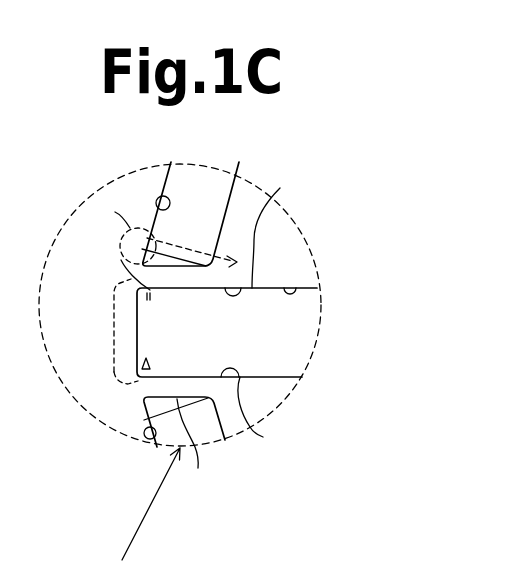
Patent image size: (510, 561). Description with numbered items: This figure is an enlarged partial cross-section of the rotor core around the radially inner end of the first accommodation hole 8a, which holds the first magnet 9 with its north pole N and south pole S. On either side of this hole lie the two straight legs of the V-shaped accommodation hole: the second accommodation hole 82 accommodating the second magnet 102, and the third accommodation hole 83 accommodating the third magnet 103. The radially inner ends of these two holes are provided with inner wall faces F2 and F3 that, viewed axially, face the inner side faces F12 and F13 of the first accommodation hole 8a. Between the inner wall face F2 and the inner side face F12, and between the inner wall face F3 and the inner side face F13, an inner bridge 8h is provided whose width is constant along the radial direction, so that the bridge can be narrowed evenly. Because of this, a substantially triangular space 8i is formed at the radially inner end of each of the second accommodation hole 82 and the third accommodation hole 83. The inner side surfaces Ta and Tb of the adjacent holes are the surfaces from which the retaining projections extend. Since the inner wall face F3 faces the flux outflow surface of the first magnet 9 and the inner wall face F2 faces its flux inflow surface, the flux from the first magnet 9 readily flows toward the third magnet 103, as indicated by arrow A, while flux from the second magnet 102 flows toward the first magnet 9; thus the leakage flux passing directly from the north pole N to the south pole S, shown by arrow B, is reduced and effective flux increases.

The first magnet 9 is at (292, 360).
The inner bridge 8h is at (192, 282).
The first accommodation hole 8a is at (287, 284).
The space 8i is at (123, 255).
The third accommodation hole 83 is at (236, 184).
The second accommodation hole 82 is at (223, 438).
The third magnet 103 is at (190, 178).
The second magnet 102 is at (203, 430).
The arrow A is at (115, 212).
The arrow B is at (112, 323).
The north pole N is at (246, 303).
The south pole S is at (244, 360).
The inner side surface Ta is at (148, 441).
The inner side surface Tb is at (157, 210).
The inner wall face F2 is at (194, 451).
The inner wall face F3 is at (188, 248).
The inner side face F12 is at (275, 417).
The inner side face F13 is at (283, 224).